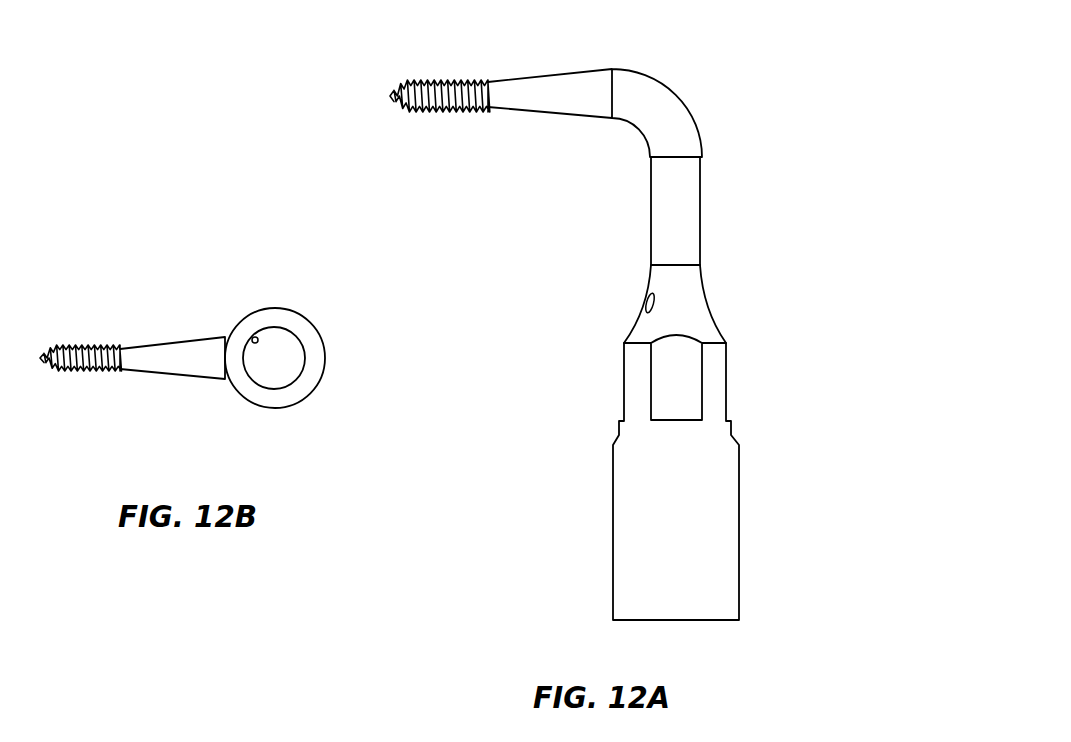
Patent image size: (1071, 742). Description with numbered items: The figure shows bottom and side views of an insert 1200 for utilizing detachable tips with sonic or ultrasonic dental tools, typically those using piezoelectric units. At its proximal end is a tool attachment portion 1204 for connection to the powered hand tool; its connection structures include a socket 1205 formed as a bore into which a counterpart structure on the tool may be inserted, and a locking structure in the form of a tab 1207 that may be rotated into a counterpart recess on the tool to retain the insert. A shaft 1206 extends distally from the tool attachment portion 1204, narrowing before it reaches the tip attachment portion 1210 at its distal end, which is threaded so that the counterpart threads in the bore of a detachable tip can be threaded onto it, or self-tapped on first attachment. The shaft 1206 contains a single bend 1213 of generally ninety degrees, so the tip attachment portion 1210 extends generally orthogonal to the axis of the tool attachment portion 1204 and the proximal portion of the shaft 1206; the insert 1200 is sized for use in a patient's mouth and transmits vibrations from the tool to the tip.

In FIG. 12A, the insert 1200 is at (751, 389).
In FIG. 12B, the insert 1200 is at (125, 289).
In FIG. 12A, the tool attachment portion 1204 is at (599, 581).
In FIG. 12B, the tool attachment portion 1204 is at (337, 317).
In FIG. 12B, the socket 1205 is at (311, 387).
In FIG. 12A, the shaft 1206 is at (683, 182).
In FIG. 12B, the tab 1207 is at (255, 336).
In FIG. 12A, the tip attachment portion 1210 is at (432, 113).
In FIG. 12B, the tip attachment portion 1210 is at (75, 374).
In FIG. 12A, the bend 1213 is at (694, 85).